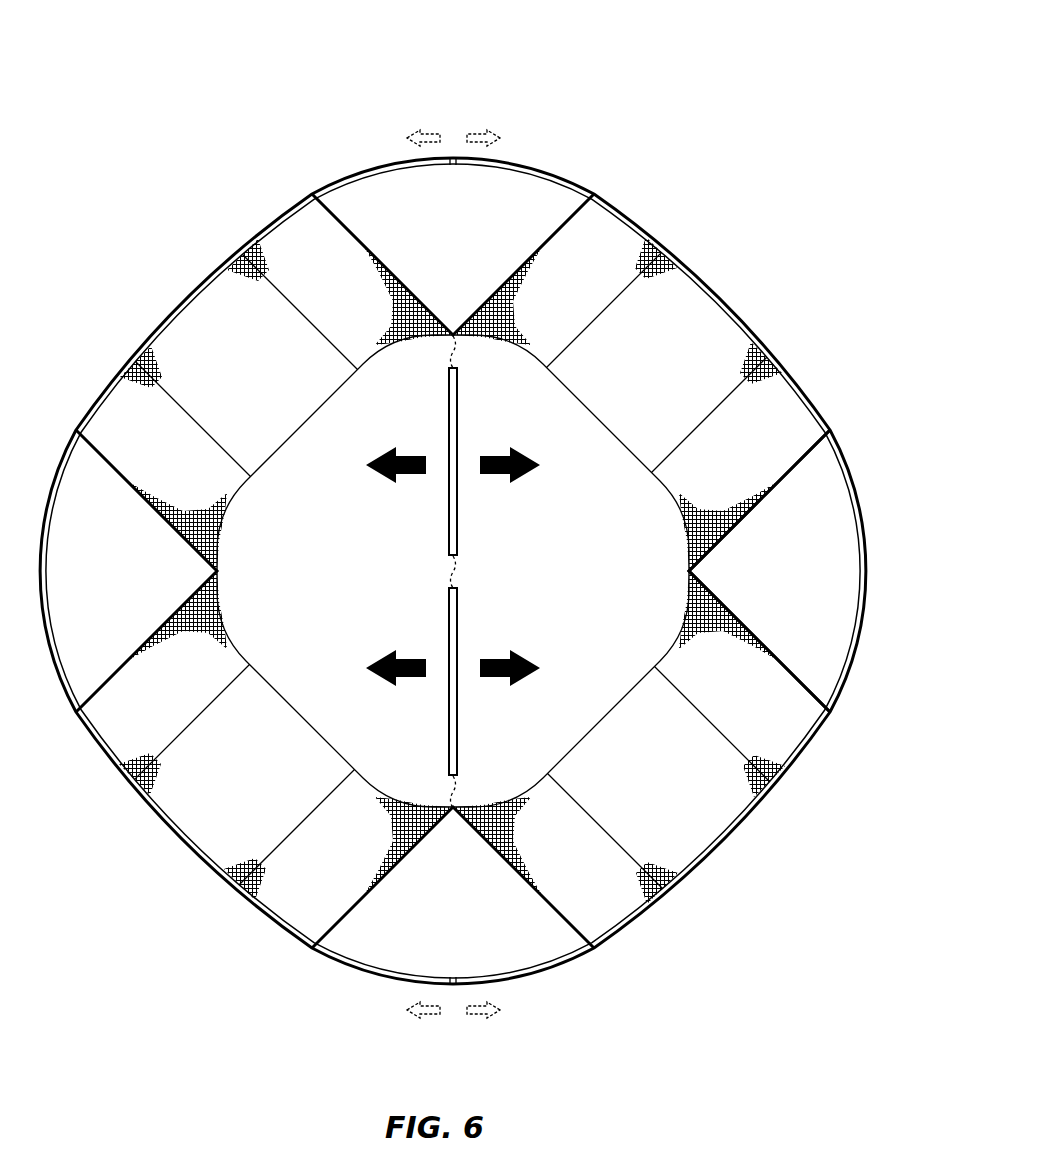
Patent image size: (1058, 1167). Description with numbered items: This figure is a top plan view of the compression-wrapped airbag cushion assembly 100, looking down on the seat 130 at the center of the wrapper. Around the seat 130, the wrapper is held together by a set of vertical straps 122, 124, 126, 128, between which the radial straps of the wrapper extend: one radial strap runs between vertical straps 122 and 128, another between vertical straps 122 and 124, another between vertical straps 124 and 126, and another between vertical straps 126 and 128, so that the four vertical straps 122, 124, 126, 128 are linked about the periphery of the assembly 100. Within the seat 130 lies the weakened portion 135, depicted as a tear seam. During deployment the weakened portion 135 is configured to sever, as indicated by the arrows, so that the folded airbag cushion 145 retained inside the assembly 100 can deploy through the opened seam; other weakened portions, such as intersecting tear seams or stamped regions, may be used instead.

The assembly 100 is at (597, 141).
The vertical strap 122 is at (657, 287).
The vertical strap 124 is at (250, 292).
The vertical strap 126 is at (297, 882).
The vertical strap 128 is at (612, 887).
The seat 130 is at (582, 480).
The weakened portion 135 is at (457, 612).
The airbag cushion 145 is at (812, 571).